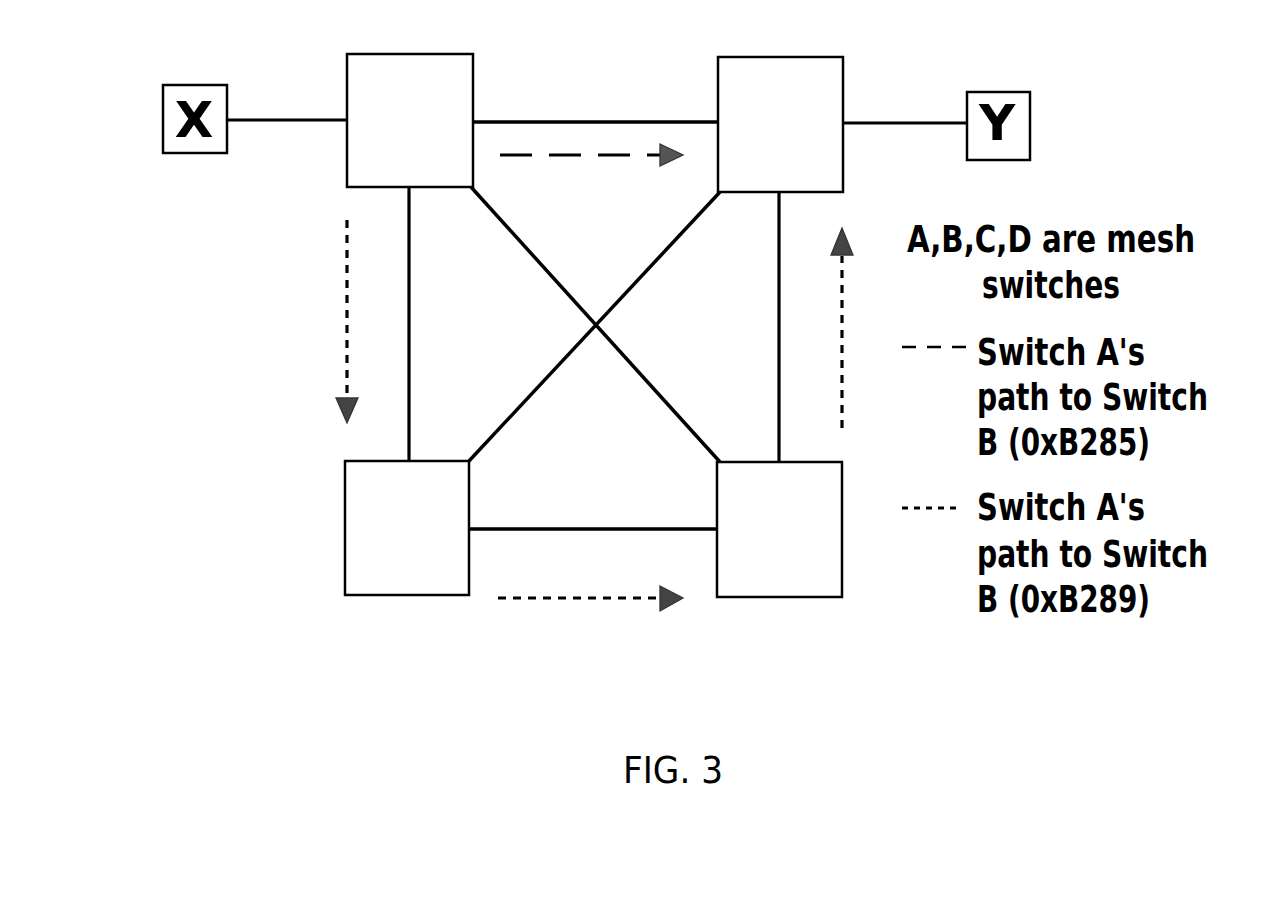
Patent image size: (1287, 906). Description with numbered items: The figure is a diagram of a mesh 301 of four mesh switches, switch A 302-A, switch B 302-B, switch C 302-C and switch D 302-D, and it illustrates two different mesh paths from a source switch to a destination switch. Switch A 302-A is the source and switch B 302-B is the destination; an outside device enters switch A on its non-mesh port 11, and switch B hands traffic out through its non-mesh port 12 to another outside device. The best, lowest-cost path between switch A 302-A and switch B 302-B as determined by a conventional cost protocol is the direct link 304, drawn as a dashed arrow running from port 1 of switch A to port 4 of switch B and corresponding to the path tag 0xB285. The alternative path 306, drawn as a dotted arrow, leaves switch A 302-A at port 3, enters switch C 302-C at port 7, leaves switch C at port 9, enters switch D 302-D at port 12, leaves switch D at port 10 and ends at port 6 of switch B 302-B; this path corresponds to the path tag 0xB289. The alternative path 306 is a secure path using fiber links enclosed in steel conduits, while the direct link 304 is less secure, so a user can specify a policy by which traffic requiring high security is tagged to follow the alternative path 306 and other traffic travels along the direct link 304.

The mesh 301 is at (573, 470).
The switch A 302-A is at (410, 120).
The switch B 302-B is at (780, 124).
The switch C 302-C is at (407, 528).
The switch D 302-D is at (779, 529).
The direct link 304 is at (885, 251).
The alternative path 306 is at (803, 415).
The port 1 is at (493, 103).
The port 3 is at (394, 218).
The port 4 is at (697, 104).
The port 6 is at (802, 221).
The port 7 is at (394, 436).
The port 9 is at (492, 564).
The port 10 is at (810, 443).
The port 11 is at (287, 104).
The port 12 is at (823, 337).